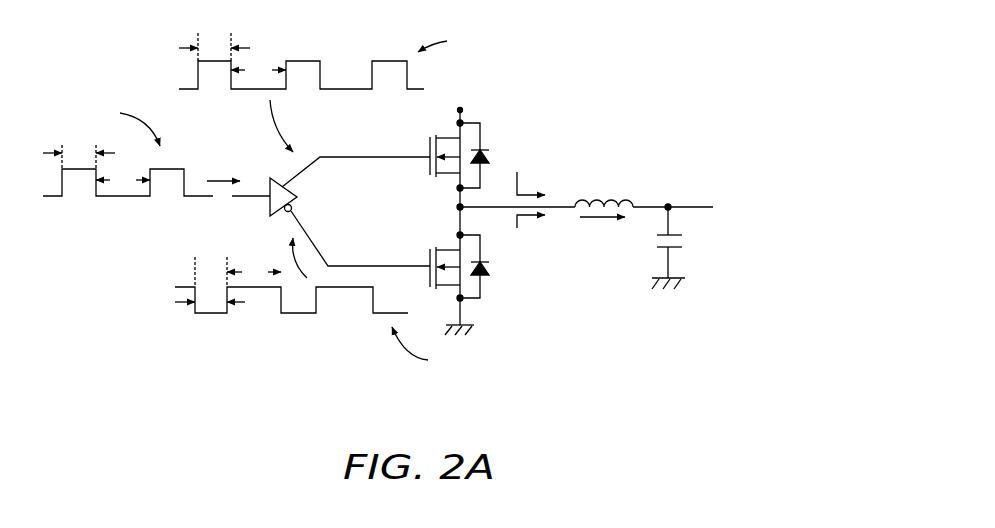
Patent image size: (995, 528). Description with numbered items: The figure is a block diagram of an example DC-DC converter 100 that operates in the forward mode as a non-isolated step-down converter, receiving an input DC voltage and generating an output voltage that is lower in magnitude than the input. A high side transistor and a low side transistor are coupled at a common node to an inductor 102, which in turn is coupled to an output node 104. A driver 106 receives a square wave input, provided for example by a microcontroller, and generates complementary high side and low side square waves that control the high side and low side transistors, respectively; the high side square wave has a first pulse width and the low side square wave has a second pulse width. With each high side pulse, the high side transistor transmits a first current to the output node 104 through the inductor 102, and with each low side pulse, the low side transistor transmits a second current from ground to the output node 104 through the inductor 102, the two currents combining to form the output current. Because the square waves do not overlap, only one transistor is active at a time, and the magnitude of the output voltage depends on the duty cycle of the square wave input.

The DC-DC converter 100 is at (820, 69).
The inductor 102 is at (600, 200).
The output node 104 is at (670, 205).
The driver 106 is at (267, 200).